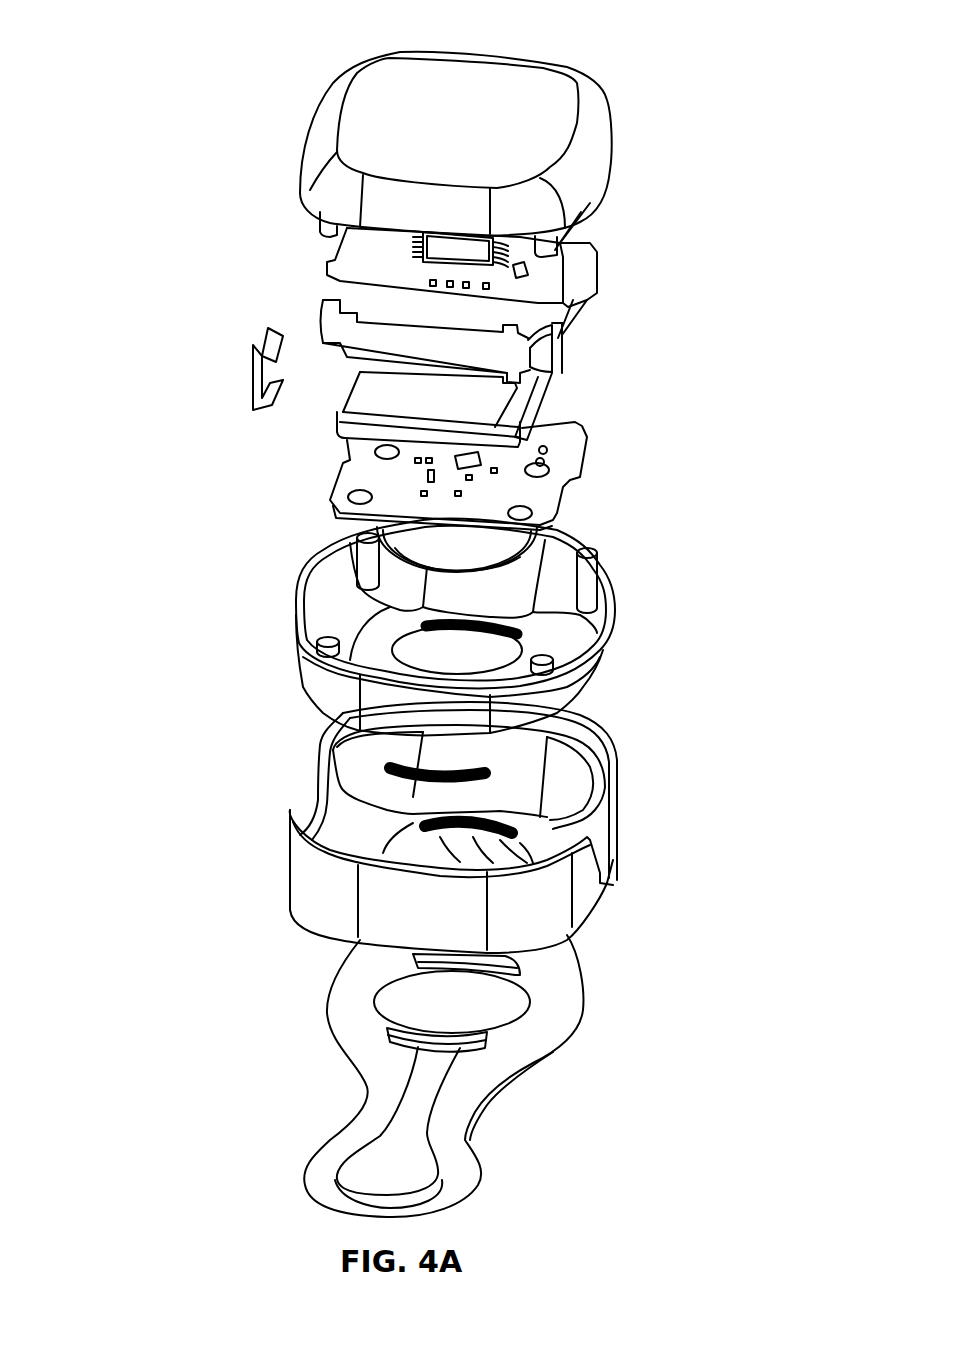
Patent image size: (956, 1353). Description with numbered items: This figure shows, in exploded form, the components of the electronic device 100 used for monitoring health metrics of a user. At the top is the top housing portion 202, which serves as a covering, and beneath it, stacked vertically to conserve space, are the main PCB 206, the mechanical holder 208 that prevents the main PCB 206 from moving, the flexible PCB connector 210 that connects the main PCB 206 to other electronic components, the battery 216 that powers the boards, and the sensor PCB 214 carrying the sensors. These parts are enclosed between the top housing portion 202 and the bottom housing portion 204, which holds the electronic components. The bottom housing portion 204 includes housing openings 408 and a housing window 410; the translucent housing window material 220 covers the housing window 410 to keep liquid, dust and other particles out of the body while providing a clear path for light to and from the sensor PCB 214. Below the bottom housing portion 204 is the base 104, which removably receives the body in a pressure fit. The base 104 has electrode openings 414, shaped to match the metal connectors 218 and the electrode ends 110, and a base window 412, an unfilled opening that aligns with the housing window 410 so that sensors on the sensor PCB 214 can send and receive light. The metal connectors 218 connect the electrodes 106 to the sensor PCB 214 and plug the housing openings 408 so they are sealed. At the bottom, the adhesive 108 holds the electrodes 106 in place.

The electronic device 100 is at (180, 40).
The top housing portion 202 is at (288, 122).
The main printed circuit board 206 is at (315, 255).
The mechanical holder 208 is at (305, 315).
The flexible PCB connector 210 is at (238, 378).
The battery 216 is at (321, 428).
The sensor PCB 214 is at (332, 478).
The bottom housing portion 204 is at (418, 627).
The housing openings 408 is at (362, 566).
The housing window material 220 is at (518, 573).
The housing window 410 is at (525, 639).
The base 104 is at (429, 827).
The electrode openings 414 is at (405, 796).
The metal connectors 218 is at (515, 777).
The base window 412 is at (553, 830).
The electrode ends 110 is at (485, 1027).
The adhesive 108 is at (452, 1076).
The electrodes 106 is at (347, 1163).